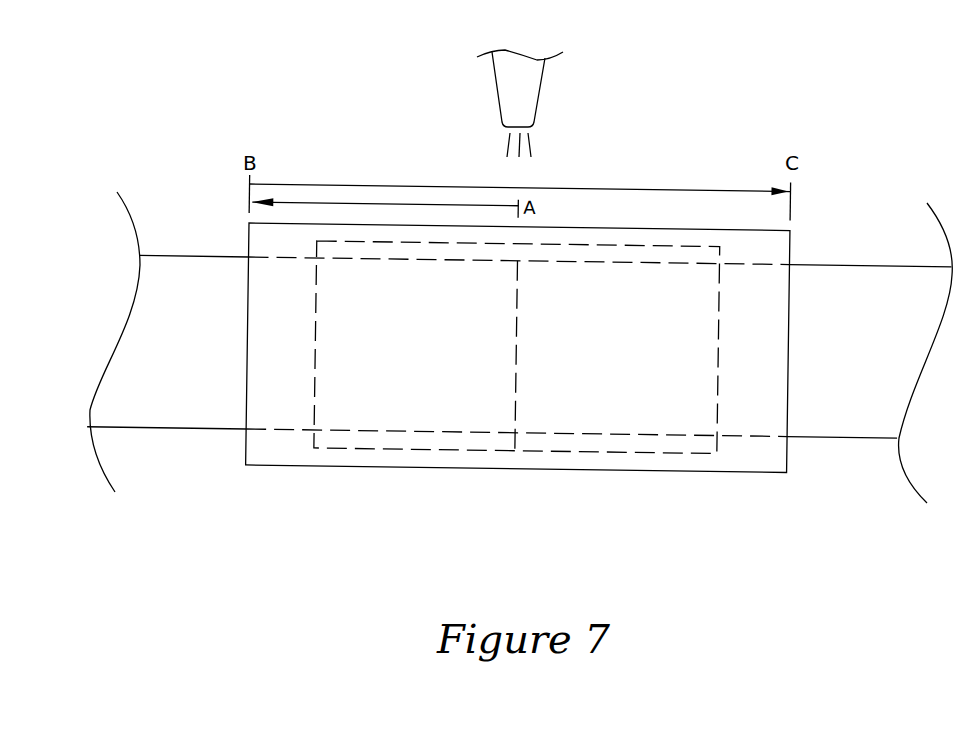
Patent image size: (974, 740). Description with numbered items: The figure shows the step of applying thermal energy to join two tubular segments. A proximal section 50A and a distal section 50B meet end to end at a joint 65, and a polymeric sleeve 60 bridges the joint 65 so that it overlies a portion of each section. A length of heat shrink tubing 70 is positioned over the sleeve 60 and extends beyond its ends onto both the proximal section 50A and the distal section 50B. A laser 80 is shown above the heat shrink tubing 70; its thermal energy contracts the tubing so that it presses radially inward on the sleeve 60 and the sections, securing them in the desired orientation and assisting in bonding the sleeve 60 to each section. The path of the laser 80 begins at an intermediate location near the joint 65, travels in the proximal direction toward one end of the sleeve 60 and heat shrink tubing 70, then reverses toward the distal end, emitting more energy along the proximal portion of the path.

The proximal section 50A is at (193, 252).
The distal section 50B is at (870, 265).
The sleeve 60 is at (658, 443).
The joint 65 is at (518, 447).
The heat shrink tubing 70 is at (758, 455).
The laser 80 is at (527, 90).